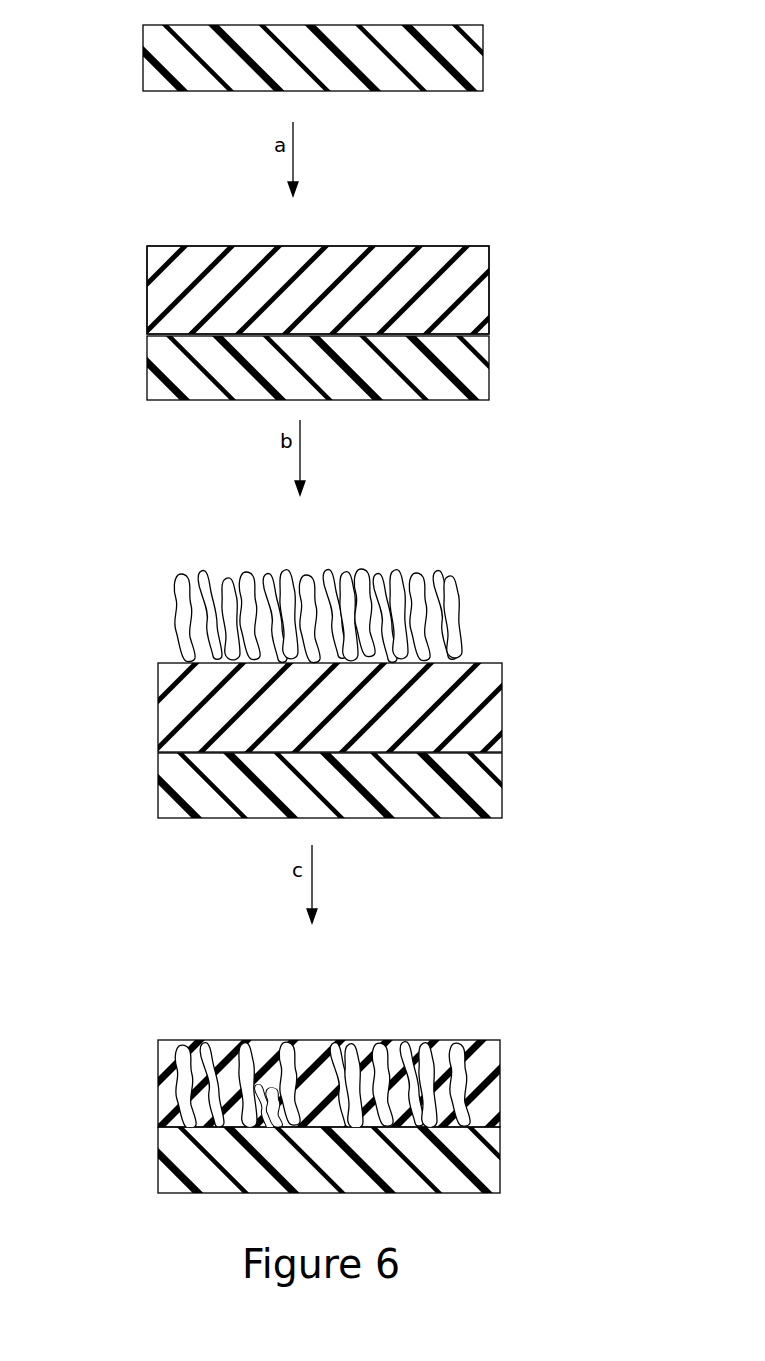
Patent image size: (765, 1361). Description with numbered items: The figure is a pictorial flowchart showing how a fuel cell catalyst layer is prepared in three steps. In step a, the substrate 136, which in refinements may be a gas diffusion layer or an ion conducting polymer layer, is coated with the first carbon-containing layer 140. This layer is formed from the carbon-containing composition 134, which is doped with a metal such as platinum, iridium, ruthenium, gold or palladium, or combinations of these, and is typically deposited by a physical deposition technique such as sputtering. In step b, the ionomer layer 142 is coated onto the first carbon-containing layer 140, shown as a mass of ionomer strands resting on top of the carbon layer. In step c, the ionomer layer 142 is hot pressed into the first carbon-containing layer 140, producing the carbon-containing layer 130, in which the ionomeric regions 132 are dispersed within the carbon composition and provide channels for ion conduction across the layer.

The substrate 136 is at (143, 50).
The first carbon-containing layer 140 is at (147, 286).
The carbon-containing composition 134 is at (473, 273).
The ionomer layer 142 is at (455, 608).
The ionomeric regions 132 is at (183, 1082).
The carbon-containing layer 130 is at (492, 1034).